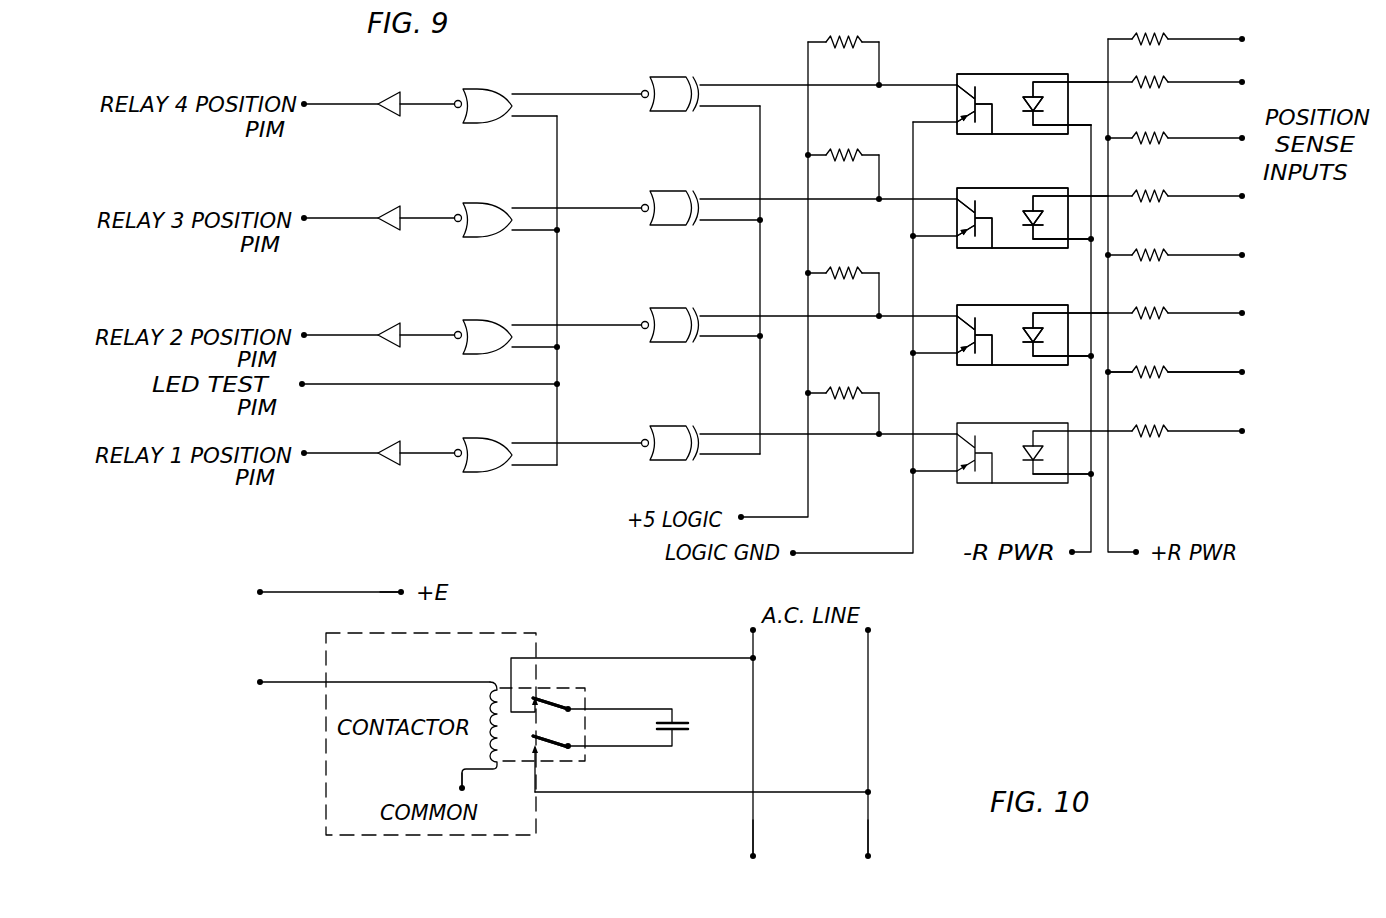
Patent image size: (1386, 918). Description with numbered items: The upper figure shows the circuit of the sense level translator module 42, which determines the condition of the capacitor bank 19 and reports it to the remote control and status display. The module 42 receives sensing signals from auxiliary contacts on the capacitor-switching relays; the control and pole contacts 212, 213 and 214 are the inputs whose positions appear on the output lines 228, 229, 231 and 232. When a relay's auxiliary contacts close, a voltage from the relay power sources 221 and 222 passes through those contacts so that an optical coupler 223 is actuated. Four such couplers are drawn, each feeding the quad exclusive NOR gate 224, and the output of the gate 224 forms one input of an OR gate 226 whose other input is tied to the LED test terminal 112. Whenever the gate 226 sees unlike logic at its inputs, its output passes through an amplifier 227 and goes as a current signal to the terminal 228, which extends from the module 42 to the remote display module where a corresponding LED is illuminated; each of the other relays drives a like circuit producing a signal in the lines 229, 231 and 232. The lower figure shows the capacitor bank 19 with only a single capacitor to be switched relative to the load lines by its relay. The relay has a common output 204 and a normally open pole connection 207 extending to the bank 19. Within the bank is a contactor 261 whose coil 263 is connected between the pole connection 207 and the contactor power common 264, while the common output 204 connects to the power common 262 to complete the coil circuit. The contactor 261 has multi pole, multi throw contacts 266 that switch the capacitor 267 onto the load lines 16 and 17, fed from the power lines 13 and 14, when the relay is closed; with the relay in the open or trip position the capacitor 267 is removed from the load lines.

In FIG. 9, the sense level translator module 42 is at (1002, 37).
In FIG. 9, the relay position output line 232 is at (347, 105).
In FIG. 9, the relay position output line 231 is at (352, 219).
In FIG. 9, the relay position output line 229 is at (348, 333).
In FIG. 9, the relay position output terminal 228 is at (345, 453).
In FIG. 9, the LED test terminal 112 is at (348, 383).
In FIG. 9, the amplifier 227 is at (402, 446).
In FIG. 9, the OR gate 226 is at (493, 473).
In FIG. 9, the quad exclusive NOR gate 224 is at (673, 428).
In FIG. 9, the optical coupler 223 is at (1013, 485).
In FIG. 9, the relay power source 222 is at (1078, 551).
In FIG. 9, the relay power source 221 is at (1125, 556).
In FIG. 9, the control and pole contact 212 is at (1207, 436).
In FIG. 9, the control and pole contact 213 is at (1202, 370).
In FIG. 9, the control and pole contact 214 is at (1223, 352).
In FIG. 10, the common output 204 is at (285, 592).
In FIG. 10, the power common 262 is at (403, 590).
In FIG. 10, the contactor 261 is at (523, 629).
In FIG. 10, the normally open pole connection 207 is at (280, 688).
In FIG. 10, the coil 263 is at (487, 706).
In FIG. 10, the contactor power common 264 is at (473, 787).
In FIG. 10, the multi pole, multi throw contacts 266 is at (557, 708).
In FIG. 10, the capacitor 267 is at (683, 728).
In FIG. 10, the capacitor bank 19 is at (632, 631).
In FIG. 10, the load line 16 is at (758, 651).
In FIG. 10, the load line 17 is at (872, 652).
In FIG. 10, the power line 13 is at (751, 836).
In FIG. 10, the power line 14 is at (873, 834).